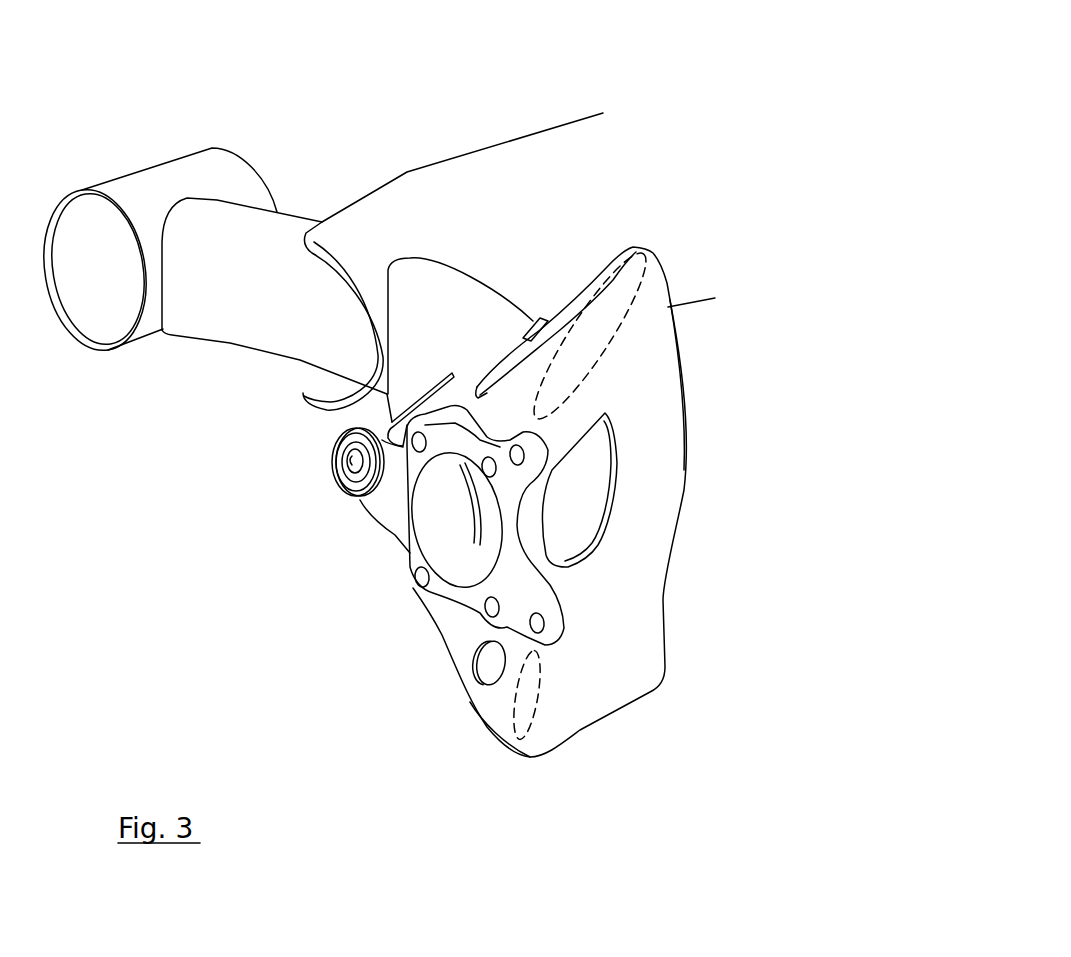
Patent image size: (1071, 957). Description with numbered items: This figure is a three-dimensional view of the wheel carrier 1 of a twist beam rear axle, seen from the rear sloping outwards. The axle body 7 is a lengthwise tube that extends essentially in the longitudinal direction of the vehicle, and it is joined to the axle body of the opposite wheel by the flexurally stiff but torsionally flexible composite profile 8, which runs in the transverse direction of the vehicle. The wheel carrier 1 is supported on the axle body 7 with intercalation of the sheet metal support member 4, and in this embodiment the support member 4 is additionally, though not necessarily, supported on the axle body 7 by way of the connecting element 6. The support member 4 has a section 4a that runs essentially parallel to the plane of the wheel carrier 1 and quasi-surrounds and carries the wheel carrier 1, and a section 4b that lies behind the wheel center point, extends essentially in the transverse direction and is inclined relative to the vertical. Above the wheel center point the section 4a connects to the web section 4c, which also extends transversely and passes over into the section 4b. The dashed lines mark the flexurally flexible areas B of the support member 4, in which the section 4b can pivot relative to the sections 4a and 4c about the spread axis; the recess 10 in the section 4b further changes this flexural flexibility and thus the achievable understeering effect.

The wheel carrier 1 is at (433, 593).
The support member 4 is at (541, 765).
The section of the support member 4a is at (490, 700).
The section of the support member 4b is at (653, 460).
The web section 4c is at (532, 373).
The connecting element 6 is at (327, 477).
The axle body 7 is at (247, 297).
The composite profile 8 is at (472, 187).
The recess 10 is at (592, 502).
The flexurally flexible areas B is at (603, 358).